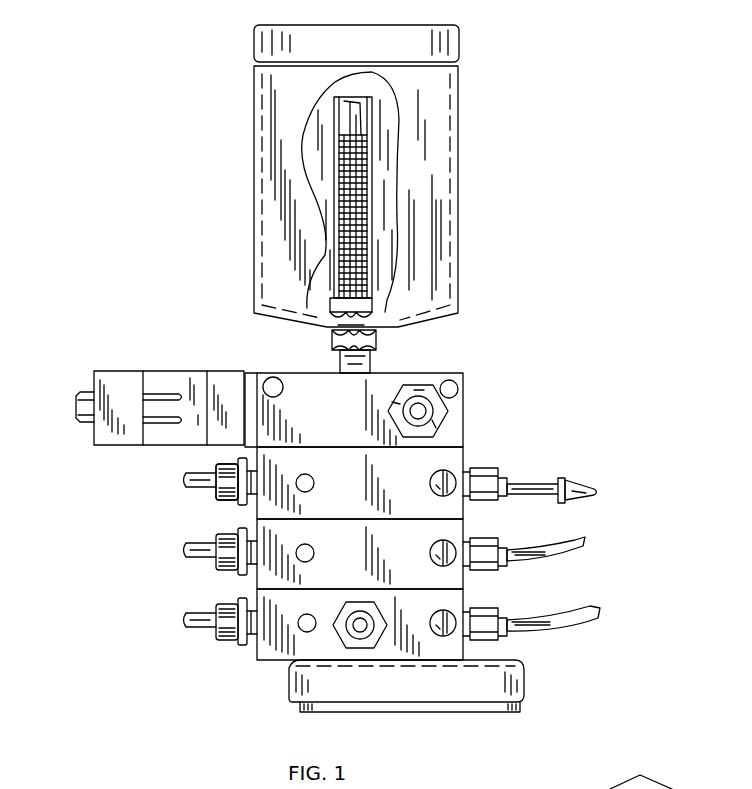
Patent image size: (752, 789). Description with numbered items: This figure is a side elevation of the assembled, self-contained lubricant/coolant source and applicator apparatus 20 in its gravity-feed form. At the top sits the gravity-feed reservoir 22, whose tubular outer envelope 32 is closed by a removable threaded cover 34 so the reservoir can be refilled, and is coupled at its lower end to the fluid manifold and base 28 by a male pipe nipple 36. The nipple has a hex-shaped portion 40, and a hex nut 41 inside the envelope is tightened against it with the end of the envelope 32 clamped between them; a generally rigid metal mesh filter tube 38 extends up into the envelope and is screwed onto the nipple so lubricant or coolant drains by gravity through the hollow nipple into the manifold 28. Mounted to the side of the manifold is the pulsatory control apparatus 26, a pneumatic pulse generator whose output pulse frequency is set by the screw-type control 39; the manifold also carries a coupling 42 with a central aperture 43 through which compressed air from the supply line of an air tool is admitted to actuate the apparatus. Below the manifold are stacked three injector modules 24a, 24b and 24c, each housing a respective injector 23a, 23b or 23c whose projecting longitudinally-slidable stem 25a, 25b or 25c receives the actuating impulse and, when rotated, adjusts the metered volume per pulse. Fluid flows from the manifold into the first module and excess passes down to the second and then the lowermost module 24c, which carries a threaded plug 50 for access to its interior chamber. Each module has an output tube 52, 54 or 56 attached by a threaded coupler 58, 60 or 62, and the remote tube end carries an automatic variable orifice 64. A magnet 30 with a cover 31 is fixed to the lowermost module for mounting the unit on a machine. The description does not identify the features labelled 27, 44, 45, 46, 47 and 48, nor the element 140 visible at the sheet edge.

The lubricant/coolant source and applicator apparatus 20 is at (603, 213).
The gravity-feed reservoir 22 is at (462, 92).
The injector 23a is at (226, 503).
The injector 23b is at (228, 573).
The injector 23c is at (228, 643).
The injector module 24a is at (468, 457).
The injector module 24b is at (478, 526).
The injector module 24c is at (470, 600).
The longitudinally-slidable stem 25a is at (188, 483).
The longitudinally-slidable stem 25b is at (188, 553).
The longitudinally-slidable stem 25c is at (188, 623).
The pulsatory control apparatus 26 is at (97, 370).
The knurled cap 27 is at (216, 470).
The fluid manifold and base 28 is at (466, 389).
The magnet 30 is at (519, 708).
The cover 31 is at (527, 686).
The tubular outer envelope 32 is at (462, 128).
The threaded cover 34 is at (460, 55).
The male pipe nipple 36 is at (376, 363).
The metal mesh filter tube 38 is at (376, 210).
The screw-type control 39 is at (80, 420).
The hex-shaped portion 40 is at (380, 345).
The hex nut 41 is at (380, 305).
The coupling 42 is at (447, 422).
The aperture 43 is at (398, 410).
The valve screw 44 is at (430, 490).
The mounting hole 45 is at (273, 377).
The valve screw 46 is at (430, 560).
The mounting hole 47 is at (455, 382).
The valve screw 48 is at (430, 630).
The threaded plug 50 is at (342, 620).
The output tube 52 is at (545, 496).
The output tube 54 is at (583, 556).
The output tube 56 is at (590, 627).
The coupler 58 is at (514, 488).
The coupler 60 is at (545, 568).
The coupler 62 is at (540, 636).
The automatic variable orifice 64 is at (590, 494).
The adjacent figure element 140 is at (690, 770).